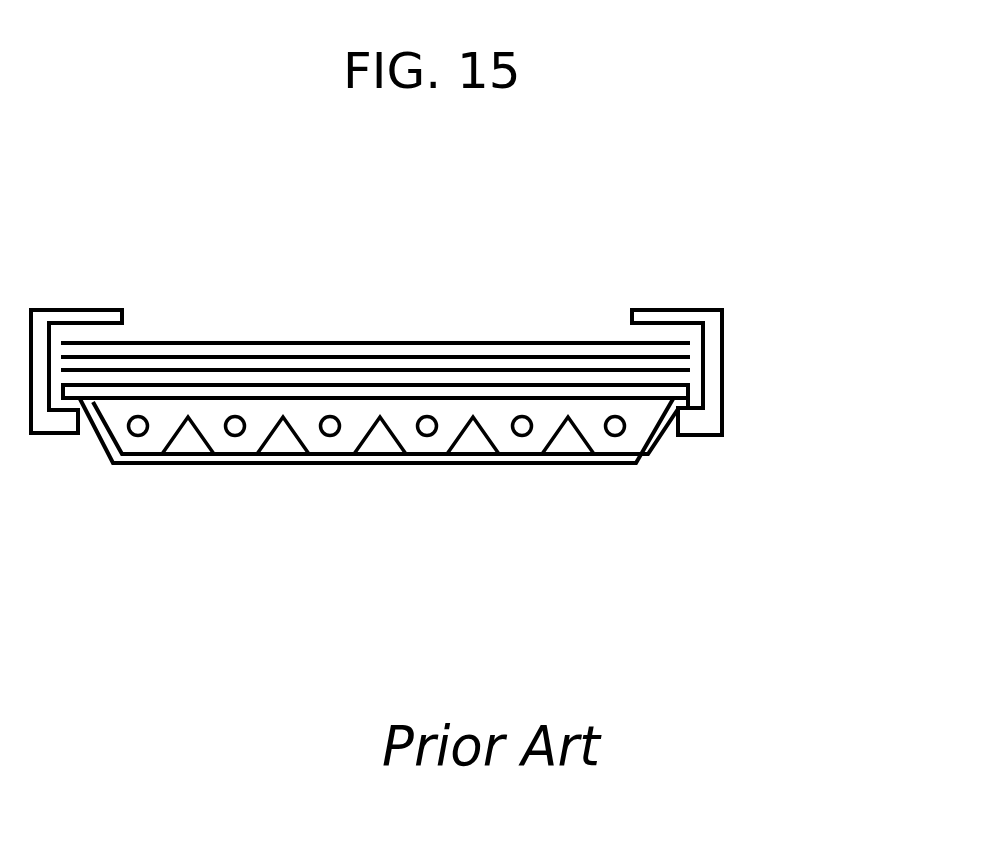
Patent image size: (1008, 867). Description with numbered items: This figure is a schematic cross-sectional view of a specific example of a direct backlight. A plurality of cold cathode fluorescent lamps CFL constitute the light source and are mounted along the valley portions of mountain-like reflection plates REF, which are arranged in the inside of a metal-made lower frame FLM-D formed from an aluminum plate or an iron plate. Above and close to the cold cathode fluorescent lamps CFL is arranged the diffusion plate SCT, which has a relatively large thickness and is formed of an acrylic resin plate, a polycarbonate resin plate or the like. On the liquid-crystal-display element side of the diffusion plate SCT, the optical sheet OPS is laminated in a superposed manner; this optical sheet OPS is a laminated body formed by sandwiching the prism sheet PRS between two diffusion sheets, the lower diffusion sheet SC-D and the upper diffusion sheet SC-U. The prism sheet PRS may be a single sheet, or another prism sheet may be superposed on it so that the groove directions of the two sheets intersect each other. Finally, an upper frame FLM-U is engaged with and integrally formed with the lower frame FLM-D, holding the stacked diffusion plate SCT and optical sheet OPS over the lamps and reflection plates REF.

The upper diffusion sheet SC-U is at (690, 343).
The prism sheet PRS is at (690, 357).
The lower diffusion sheet SC-D is at (690, 370).
The optical sheet OPS is at (477, 327).
The diffusion plate SCT is at (688, 393).
The upper frame FLM-U is at (703, 438).
The lower frame FLM-D is at (652, 450).
The cold cathode fluorescent lamp CFL is at (132, 436).
The reflection plate REF is at (268, 442).